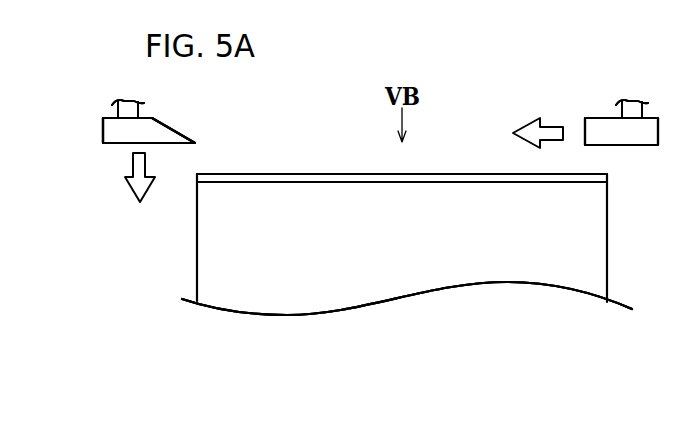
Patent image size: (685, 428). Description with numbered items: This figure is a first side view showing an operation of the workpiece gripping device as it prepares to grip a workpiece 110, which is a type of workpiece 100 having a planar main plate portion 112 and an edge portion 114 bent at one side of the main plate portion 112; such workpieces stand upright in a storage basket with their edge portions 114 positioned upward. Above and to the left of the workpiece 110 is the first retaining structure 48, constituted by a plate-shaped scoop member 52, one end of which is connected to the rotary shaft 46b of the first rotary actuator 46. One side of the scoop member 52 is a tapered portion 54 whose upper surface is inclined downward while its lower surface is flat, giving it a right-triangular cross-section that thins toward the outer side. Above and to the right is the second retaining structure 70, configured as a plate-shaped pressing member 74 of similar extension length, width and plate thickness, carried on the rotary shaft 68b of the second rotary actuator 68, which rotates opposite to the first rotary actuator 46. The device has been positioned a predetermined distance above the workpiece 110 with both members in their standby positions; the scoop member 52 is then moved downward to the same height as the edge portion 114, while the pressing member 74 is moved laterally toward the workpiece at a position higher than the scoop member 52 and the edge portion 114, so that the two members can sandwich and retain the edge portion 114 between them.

The workpiece 110 is at (427, 305).
The workpiece 100 is at (407, 336).
The edge portion 114 is at (310, 180).
The main plate portion 112 is at (342, 292).
The tapered portion 54 is at (180, 131).
The rotary shaft 46b is at (132, 108).
The first rotary actuator 46 is at (128, 109).
The scoop member 52 is at (113, 143).
The first retaining structure 48 is at (142, 186).
The pressing member 74 is at (647, 137).
The second retaining structure 70 is at (627, 167).
The rotary shaft 68b is at (622, 110).
The second rotary actuator 68 is at (632, 109).